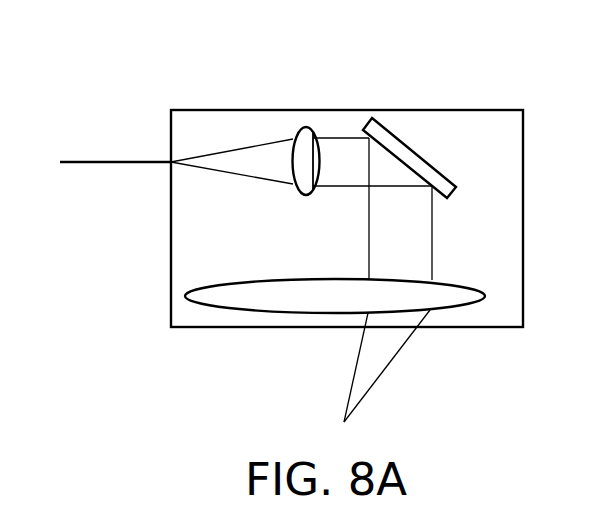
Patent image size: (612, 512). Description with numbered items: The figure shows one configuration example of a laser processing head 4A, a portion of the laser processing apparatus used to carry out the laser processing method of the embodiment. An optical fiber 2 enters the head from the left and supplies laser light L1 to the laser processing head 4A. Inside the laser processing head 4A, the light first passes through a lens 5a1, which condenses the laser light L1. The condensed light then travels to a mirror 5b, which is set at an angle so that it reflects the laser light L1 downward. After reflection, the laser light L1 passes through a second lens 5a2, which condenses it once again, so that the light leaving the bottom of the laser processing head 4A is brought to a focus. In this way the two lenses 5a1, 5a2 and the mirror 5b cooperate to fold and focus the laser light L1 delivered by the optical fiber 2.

The optical fiber 2 is at (134, 160).
The laser processing head 4A is at (268, 110).
The lens 5a1 is at (300, 195).
The mirror 5b is at (413, 145).
The laser light L1 is at (432, 230).
The lens 5a2 is at (450, 309).